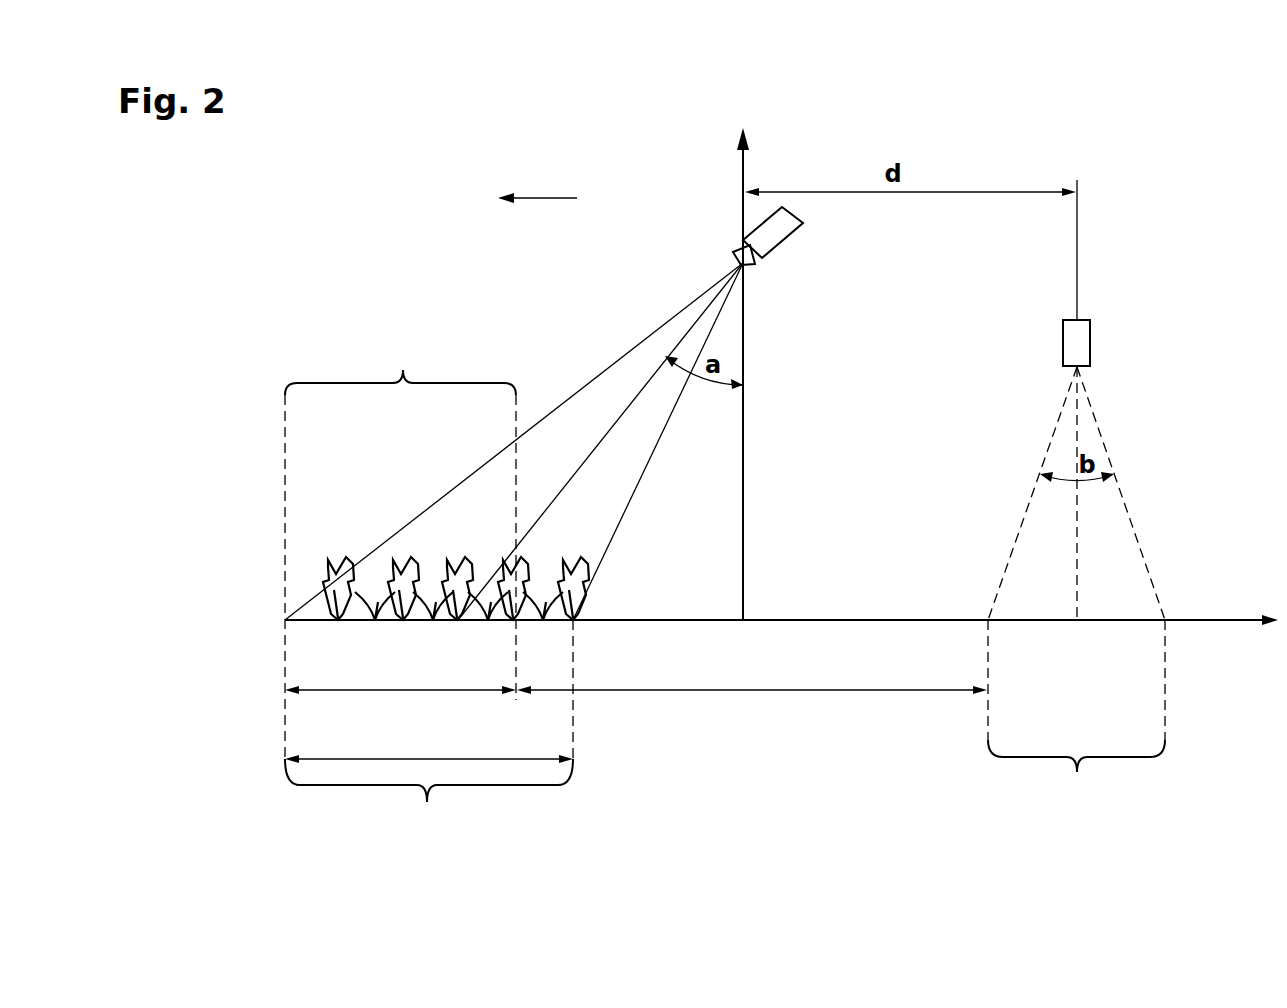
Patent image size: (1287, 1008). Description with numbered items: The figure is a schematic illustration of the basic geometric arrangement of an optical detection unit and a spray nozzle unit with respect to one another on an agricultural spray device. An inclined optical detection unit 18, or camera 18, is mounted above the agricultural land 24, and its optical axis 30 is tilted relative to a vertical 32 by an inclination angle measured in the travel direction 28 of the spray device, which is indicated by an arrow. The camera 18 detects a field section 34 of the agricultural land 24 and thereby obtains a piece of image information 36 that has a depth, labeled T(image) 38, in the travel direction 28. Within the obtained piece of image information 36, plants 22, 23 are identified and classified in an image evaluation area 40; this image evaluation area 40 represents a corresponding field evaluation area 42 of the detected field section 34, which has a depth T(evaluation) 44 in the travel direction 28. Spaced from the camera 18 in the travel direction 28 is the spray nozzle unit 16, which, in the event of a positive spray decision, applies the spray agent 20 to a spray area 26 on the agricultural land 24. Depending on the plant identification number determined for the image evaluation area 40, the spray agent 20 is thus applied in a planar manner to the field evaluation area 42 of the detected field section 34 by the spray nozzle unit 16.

The spray nozzle unit 16 is at (1082, 343).
The optical detection unit 18 is at (773, 233).
The spray agent 20 is at (1125, 497).
The plant 22 is at (328, 531).
The plant 23 is at (379, 531).
The agricultural land 24 is at (1225, 620).
The spray area 26 is at (1076, 714).
The travel direction 28 is at (545, 198).
The optical axis 30 is at (617, 420).
The vertical 32 is at (743, 168).
The field section 34 is at (429, 801).
The piece of image information 36 is at (429, 801).
The depth T(image) 38 is at (459, 759).
The image evaluation area 40 is at (400, 549).
The field evaluation area 42 is at (400, 549).
The depth T(evaluation) 44 is at (385, 690).